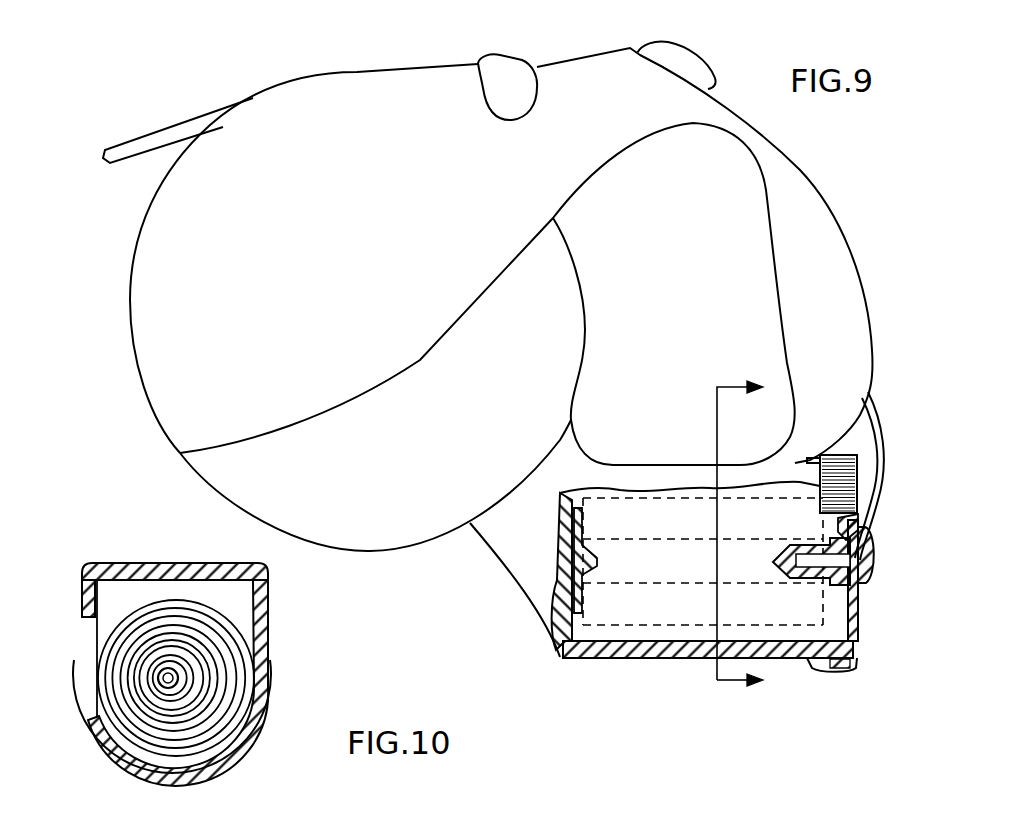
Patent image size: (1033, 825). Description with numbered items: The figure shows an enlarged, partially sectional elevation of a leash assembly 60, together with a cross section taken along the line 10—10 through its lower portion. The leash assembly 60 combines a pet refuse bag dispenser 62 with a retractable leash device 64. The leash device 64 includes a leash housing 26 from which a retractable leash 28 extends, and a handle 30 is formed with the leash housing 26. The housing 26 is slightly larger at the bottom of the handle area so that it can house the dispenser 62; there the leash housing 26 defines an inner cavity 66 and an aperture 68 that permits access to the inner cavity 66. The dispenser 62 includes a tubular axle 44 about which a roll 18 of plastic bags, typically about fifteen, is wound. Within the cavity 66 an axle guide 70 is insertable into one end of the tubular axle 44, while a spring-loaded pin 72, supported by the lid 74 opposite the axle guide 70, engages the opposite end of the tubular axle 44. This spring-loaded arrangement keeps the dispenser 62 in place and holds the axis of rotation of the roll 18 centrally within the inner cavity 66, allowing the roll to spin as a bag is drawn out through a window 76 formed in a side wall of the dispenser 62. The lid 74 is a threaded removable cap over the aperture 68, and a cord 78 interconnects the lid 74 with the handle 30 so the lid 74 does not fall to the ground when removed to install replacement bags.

In FIG. 9, the section line 10— 10 is at (736, 534).
In FIG. 9, the roll of plastic bags 18 is at (652, 612).
In FIG. 10, the roll of plastic bags 18 is at (210, 710).
In FIG. 9, the leash housing 26 is at (383, 90).
In FIG. 9, the retractable leash 28 is at (166, 132).
In FIG. 9, the handle 30 is at (800, 178).
In FIG. 9, the tubular axle 44 is at (620, 590).
In FIG. 10, the tubular axle 44 is at (180, 678).
In FIG. 9, the leash assembly 60 is at (706, 442).
In FIG. 10, the pet refuse bag dispenser 62 is at (175, 674).
In FIG. 9, the retractable leash device 64 is at (128, 345).
In FIG. 9, the inner cavity 66 is at (780, 628).
In FIG. 10, the inner cavity 66 is at (113, 609).
In FIG. 9, the aperture 68 is at (838, 656).
In FIG. 9, the axle guide 70 is at (582, 575).
In FIG. 9, the spring-loaded pin 72 is at (868, 580).
In FIG. 9, the lid 74 is at (857, 630).
In FIG. 10, the window 76 is at (97, 650).
In FIG. 9, the cord 78 is at (882, 467).